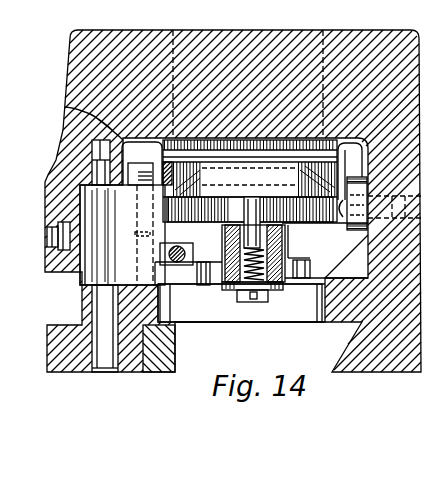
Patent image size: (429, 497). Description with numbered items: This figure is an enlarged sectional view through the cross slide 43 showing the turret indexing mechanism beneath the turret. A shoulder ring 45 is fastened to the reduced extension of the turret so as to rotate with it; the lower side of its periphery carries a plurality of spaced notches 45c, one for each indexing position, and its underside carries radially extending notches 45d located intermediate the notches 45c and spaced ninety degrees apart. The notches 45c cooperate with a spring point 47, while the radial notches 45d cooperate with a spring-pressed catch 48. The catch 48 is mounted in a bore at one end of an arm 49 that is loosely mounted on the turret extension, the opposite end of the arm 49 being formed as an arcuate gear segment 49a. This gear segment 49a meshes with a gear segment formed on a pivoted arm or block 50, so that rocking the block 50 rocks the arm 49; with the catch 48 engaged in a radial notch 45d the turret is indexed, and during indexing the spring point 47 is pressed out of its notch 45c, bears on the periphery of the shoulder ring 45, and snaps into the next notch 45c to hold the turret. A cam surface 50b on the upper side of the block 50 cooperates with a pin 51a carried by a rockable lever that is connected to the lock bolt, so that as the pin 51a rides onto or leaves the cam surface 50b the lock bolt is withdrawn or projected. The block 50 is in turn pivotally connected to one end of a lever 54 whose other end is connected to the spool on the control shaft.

The cross slide 43 is at (83, 72).
The lever 54 is at (140, 173).
The pivoted arm or block 50 is at (90, 210).
The cam surface 50b is at (155, 246).
The pin 51a is at (157, 263).
The shoulder ring 45 is at (299, 221).
The spaced notches 45c is at (247, 208).
The radially extending notches 45d is at (302, 219).
The spring-pressed catch 48 is at (240, 241).
The arm 49 is at (226, 279).
The gear segment 49a is at (290, 276).
The spring point 47 is at (338, 198).